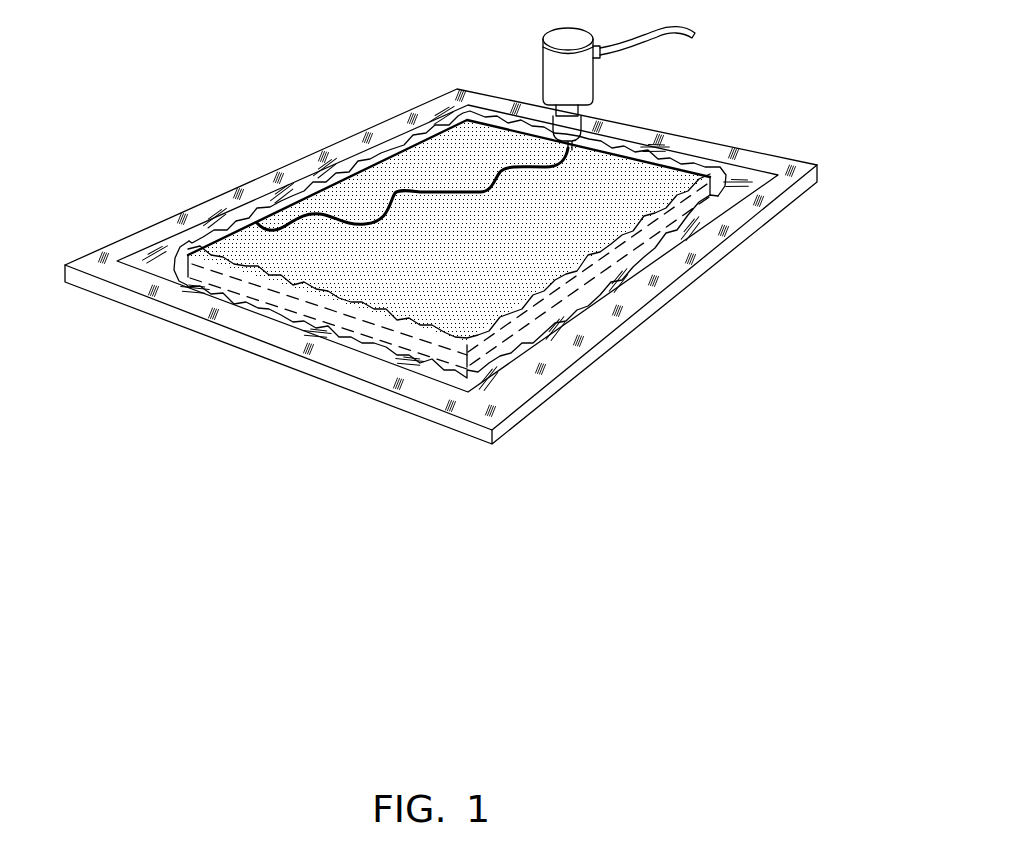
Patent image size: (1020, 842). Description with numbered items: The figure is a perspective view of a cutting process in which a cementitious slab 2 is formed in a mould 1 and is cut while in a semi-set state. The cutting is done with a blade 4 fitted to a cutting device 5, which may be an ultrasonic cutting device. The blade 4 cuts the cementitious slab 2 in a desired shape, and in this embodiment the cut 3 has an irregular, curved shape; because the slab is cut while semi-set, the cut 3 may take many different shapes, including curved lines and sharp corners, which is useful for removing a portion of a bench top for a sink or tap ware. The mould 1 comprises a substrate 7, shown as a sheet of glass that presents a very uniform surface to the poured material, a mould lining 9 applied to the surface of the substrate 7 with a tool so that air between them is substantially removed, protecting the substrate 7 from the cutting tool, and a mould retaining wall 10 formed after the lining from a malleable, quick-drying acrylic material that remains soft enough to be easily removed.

The mould 1 is at (260, 208).
The cementitious slab 2 is at (510, 263).
The cut 3 is at (392, 192).
The blade 4 is at (573, 147).
The cutting device 5 is at (550, 72).
The substrate 7 is at (710, 150).
The mould lining 9 is at (667, 243).
The mould retaining wall 10 is at (354, 340).